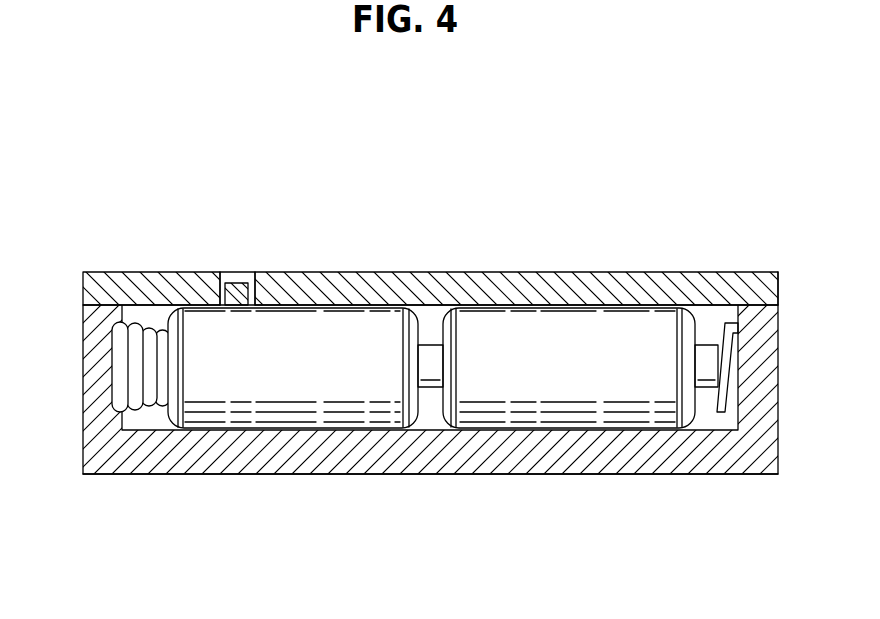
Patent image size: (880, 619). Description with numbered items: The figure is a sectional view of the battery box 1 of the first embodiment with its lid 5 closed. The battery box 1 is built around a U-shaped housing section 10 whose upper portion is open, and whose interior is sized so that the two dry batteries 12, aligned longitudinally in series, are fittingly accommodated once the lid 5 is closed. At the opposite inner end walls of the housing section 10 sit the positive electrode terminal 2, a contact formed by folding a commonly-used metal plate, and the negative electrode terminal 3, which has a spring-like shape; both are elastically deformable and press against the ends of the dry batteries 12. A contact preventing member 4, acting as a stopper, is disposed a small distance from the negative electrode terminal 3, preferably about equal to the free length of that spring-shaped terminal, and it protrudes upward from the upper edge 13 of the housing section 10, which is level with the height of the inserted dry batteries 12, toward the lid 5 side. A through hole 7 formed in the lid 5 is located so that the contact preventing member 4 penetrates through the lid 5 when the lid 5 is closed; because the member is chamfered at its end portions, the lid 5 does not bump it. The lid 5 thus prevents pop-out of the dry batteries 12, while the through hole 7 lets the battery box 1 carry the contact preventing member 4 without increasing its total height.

The battery box 1 is at (540, 486).
The positive electrode terminal 2 is at (728, 390).
The negative electrode terminal 3 is at (135, 365).
The contact preventing member 4 is at (242, 283).
The lid 5 is at (512, 272).
The through hole 7 is at (225, 275).
The housing section 10 is at (775, 432).
The dry battery 12 is at (487, 338).
The upper edge 13 is at (757, 301).